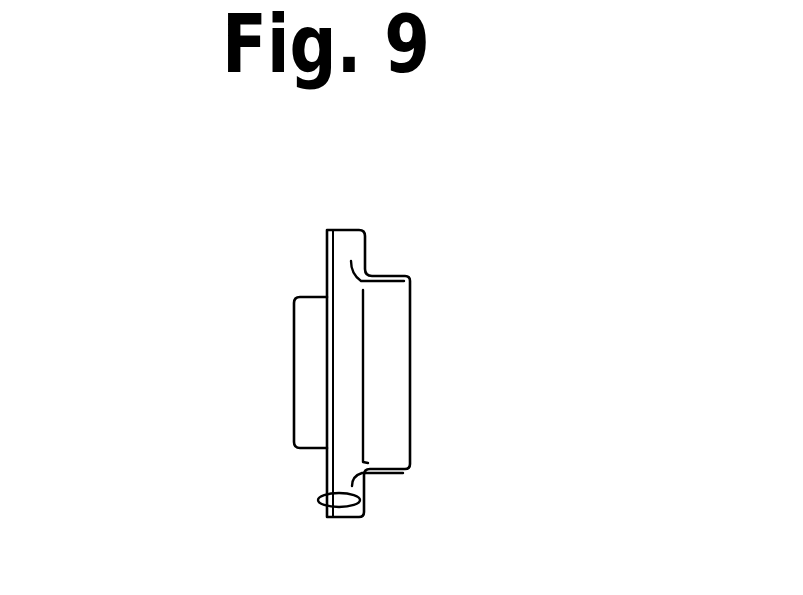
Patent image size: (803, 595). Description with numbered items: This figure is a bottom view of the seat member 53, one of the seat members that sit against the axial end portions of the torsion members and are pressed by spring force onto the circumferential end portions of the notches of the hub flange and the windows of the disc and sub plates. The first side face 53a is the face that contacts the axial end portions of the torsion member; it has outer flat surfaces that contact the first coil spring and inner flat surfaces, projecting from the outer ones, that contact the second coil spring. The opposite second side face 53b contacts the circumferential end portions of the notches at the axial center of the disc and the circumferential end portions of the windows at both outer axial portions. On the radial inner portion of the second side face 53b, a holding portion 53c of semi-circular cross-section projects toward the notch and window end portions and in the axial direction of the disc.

The seat member 53 is at (369, 229).
The first side face 53a is at (358, 504).
The second side face 53b is at (362, 393).
The holding portion 53c is at (392, 363).